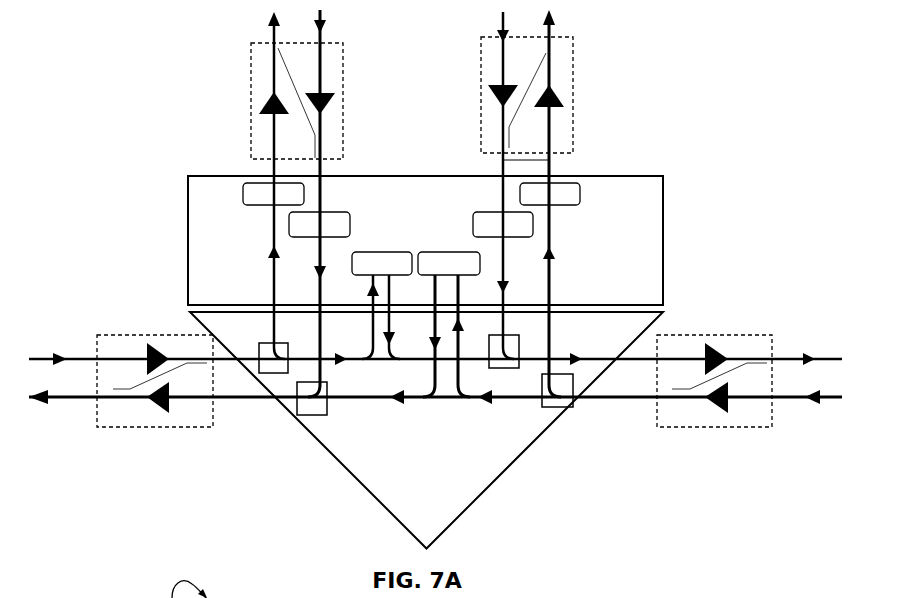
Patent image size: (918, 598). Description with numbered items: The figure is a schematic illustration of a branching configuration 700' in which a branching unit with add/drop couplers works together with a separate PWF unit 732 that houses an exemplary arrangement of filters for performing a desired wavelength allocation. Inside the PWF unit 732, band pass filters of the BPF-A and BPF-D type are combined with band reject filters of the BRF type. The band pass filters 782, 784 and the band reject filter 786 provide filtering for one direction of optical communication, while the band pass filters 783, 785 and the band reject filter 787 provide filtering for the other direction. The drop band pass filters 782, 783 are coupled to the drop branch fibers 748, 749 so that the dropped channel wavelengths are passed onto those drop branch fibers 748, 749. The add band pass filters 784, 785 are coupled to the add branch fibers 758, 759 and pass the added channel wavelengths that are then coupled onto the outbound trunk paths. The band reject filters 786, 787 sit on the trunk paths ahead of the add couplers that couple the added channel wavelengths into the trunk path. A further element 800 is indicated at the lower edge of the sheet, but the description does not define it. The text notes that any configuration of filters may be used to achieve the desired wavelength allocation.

The branching configuration 700' is at (435, 279).
The PWF unit 732 is at (188, 217).
The drop branch fiber 748 is at (549, 76).
The drop branch fiber 749 is at (274, 70).
The add branch fiber 758 is at (320, 70).
The add branch fiber 759 is at (503, 68).
The drop band pass filter 782 is at (580, 195).
The drop band pass filter 783 is at (244, 200).
The add band pass filter 784 is at (352, 214).
The add band pass filter 785 is at (473, 214).
The band reject filter 786 is at (448, 252).
The band reject filter 787 is at (403, 252).
The system 800 is at (157, 597).